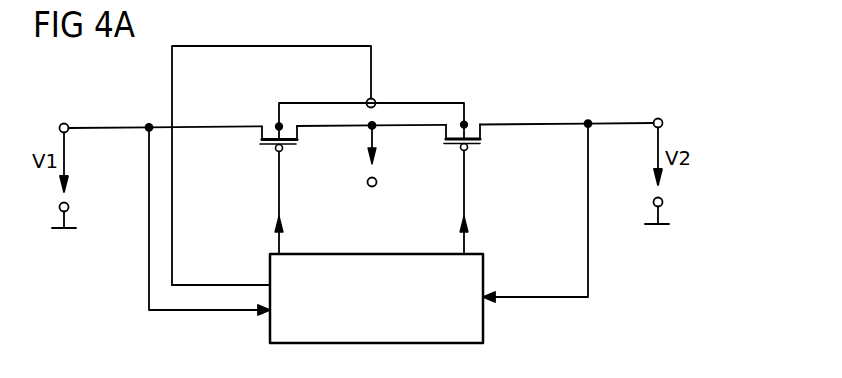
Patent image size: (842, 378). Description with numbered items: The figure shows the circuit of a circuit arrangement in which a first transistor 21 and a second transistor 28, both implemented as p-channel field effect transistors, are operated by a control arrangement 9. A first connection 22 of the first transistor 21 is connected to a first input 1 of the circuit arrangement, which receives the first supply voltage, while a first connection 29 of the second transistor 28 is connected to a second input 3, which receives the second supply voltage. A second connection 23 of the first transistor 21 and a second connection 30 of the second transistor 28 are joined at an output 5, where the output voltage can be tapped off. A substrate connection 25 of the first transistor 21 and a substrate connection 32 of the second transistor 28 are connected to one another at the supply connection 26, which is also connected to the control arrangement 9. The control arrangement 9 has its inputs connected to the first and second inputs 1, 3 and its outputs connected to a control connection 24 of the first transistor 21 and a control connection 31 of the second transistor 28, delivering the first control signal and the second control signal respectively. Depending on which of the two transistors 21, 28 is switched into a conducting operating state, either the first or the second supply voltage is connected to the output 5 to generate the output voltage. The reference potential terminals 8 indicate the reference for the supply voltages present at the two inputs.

The first input 1 is at (63, 123).
The second input 3 is at (659, 118).
The output 5 is at (376, 185).
The reference potential terminal 8 is at (55, 230).
The control arrangement 9 is at (484, 320).
The first transistor 21 is at (248, 168).
The first connection of the first transistor 22 is at (260, 131).
The second connection of the first transistor 23 is at (299, 132).
The control connection of the first transistor 24 is at (282, 151).
The substrate connection of the first transistor 25 is at (278, 112).
The supply connection 26 is at (374, 100).
The second transistor 28 is at (500, 160).
The first connection of the second transistor 29 is at (483, 133).
The second connection of the second transistor 30 is at (445, 131).
The control connection of the second transistor 31 is at (461, 150).
The substrate connection of the second transistor 32 is at (467, 121).